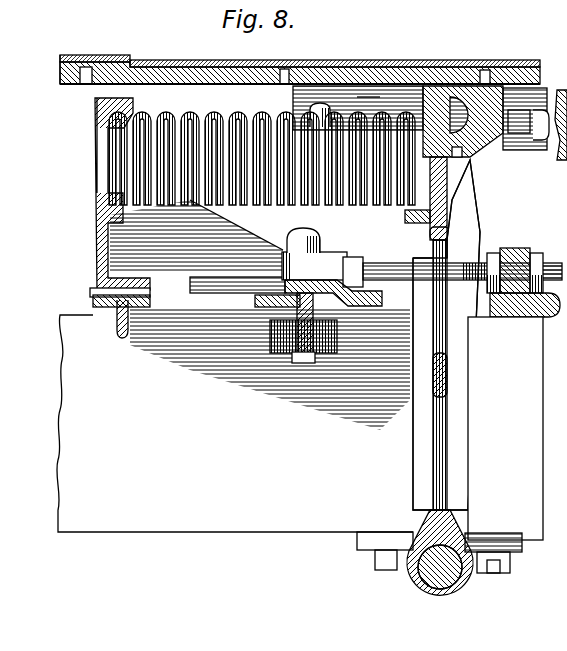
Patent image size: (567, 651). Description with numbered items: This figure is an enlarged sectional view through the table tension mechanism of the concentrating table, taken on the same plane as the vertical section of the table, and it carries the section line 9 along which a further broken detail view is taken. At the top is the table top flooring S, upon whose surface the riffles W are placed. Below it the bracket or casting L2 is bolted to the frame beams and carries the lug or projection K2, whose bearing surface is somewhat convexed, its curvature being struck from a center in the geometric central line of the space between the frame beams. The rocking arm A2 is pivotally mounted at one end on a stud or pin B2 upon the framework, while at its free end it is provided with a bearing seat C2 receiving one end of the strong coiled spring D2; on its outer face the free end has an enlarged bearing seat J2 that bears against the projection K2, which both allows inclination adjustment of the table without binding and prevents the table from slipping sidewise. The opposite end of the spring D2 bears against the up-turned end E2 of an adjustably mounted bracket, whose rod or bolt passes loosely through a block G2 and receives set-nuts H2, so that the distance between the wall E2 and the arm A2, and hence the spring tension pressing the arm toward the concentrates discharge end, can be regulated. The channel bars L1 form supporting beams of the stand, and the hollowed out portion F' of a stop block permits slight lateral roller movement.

The riffles W is at (100, 56).
The table top flooring S is at (62, 79).
The channel bars L1 is at (188, 533).
The bracket or casting L2 is at (407, 108).
The coiled spring D2 is at (245, 111).
The up-turned end of bracket E2 is at (97, 225).
The bearing seat C2 is at (323, 291).
The enlarged bearing seat J2 is at (463, 167).
The lug or projection K2 is at (513, 160).
The set-nuts H2 is at (493, 262).
The block G2 is at (523, 252).
The hollowed out portion of stop block F' is at (430, 335).
The rocking arm A2 is at (442, 433).
The stud or pin B2 is at (427, 590).
The section line 9 9 is at (461, 56).